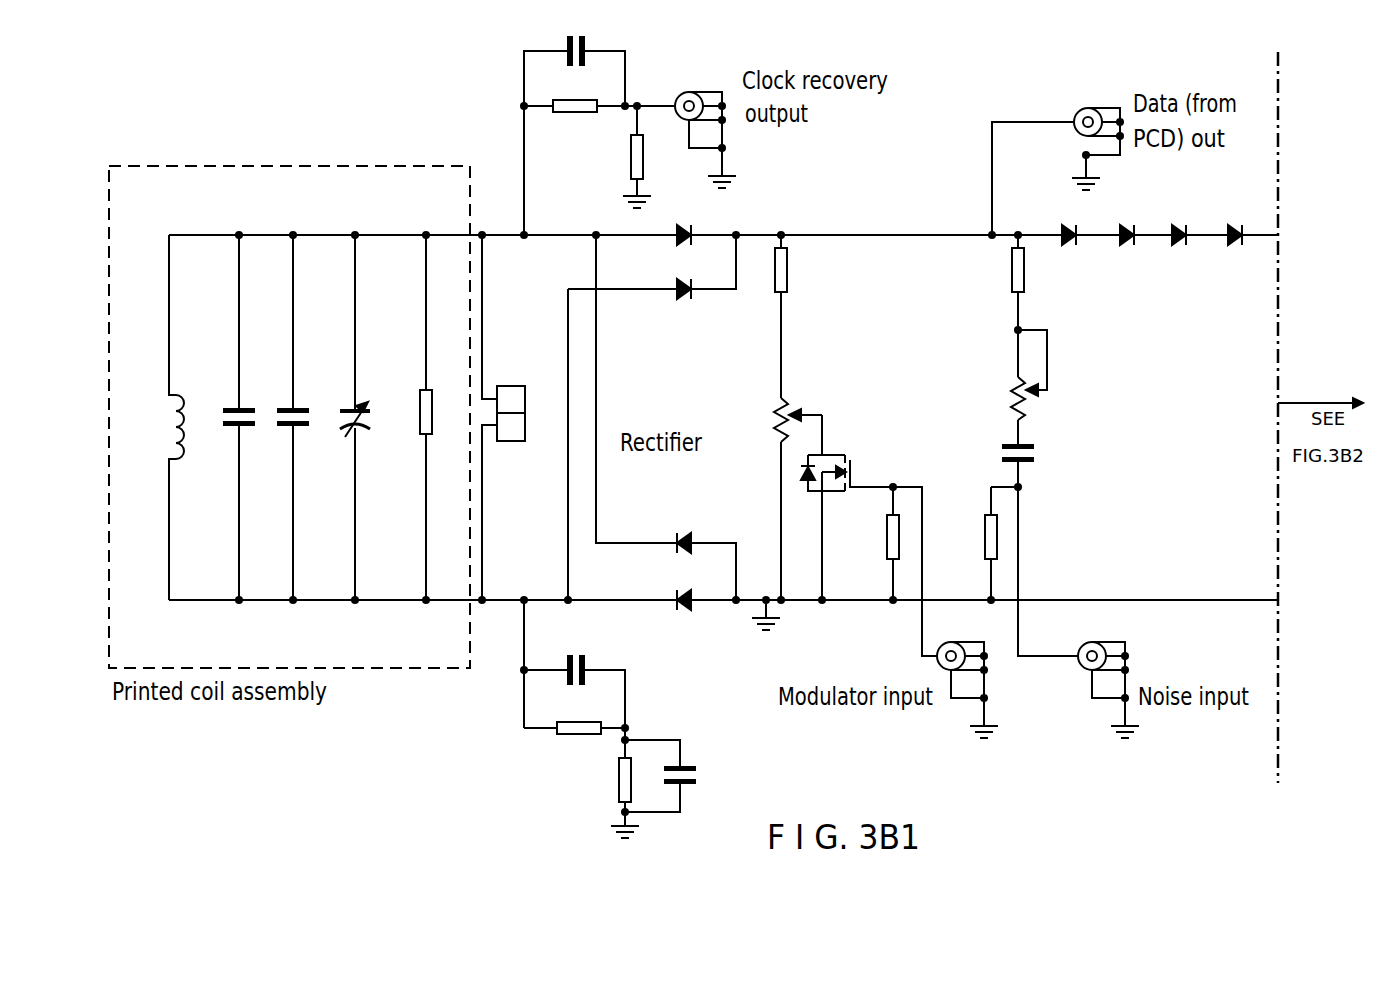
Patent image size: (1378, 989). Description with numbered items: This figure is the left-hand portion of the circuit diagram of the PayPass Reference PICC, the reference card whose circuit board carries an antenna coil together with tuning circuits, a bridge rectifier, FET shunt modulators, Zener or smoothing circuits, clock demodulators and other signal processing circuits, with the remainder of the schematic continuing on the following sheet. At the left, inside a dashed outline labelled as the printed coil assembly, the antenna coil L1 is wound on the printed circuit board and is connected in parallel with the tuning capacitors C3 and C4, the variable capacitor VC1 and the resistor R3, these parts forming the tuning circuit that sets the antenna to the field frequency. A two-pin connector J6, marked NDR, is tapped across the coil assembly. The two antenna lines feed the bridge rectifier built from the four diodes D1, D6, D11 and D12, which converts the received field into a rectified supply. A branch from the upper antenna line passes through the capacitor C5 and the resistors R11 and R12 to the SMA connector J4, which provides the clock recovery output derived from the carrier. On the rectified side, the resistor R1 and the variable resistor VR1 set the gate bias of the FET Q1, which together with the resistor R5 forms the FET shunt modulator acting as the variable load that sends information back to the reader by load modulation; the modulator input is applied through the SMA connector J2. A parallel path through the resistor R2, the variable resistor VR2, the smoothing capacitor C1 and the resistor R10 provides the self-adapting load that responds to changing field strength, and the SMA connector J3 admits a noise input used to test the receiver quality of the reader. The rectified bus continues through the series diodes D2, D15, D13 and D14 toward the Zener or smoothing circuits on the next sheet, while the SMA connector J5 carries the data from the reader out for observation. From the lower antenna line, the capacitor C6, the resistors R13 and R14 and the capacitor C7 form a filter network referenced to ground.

The printed coil inductor L1 is at (159, 417).
The capacitor C3 is at (225, 417).
The capacitor C4 is at (303, 417).
The variable capacitor VC1 is at (371, 417).
The resistor R3 is at (442, 417).
The NDR connector J6 is at (510, 417).
The capacitor C5 is at (574, 120).
The resistor R11 is at (597, 120).
The resistor R12 is at (656, 157).
The SMA connector clock recovery output J4 is at (704, 108).
The rectifier diode D1 is at (671, 246).
The rectifier diode D6 is at (652, 417).
The rectifier diode D11 is at (666, 417).
The rectifier diode D12 is at (672, 617).
The resistor R1 is at (798, 316).
The variable resistor VR1 is at (802, 488).
The MOSFET transistor Q1 is at (869, 535).
The resistor R5 is at (876, 541).
The SMA connector modulator input J2 is at (985, 689).
The SMA connector noise input J3 is at (1100, 612).
The resistor R2 is at (1035, 306).
The variable resistor VR2 is at (1043, 373).
The capacitor C1 is at (1001, 455).
The resistor R10 is at (983, 543).
The SMA connector data output J5 is at (1058, 171).
The diode D2 is at (1064, 219).
The diode D15 is at (1121, 219).
The diode D13 is at (1175, 219).
The diode D14 is at (1236, 219).
The capacitor C6 is at (574, 672).
The resistor R13 is at (574, 713).
The resistor R14 is at (607, 789).
The capacitor C7 is at (678, 776).